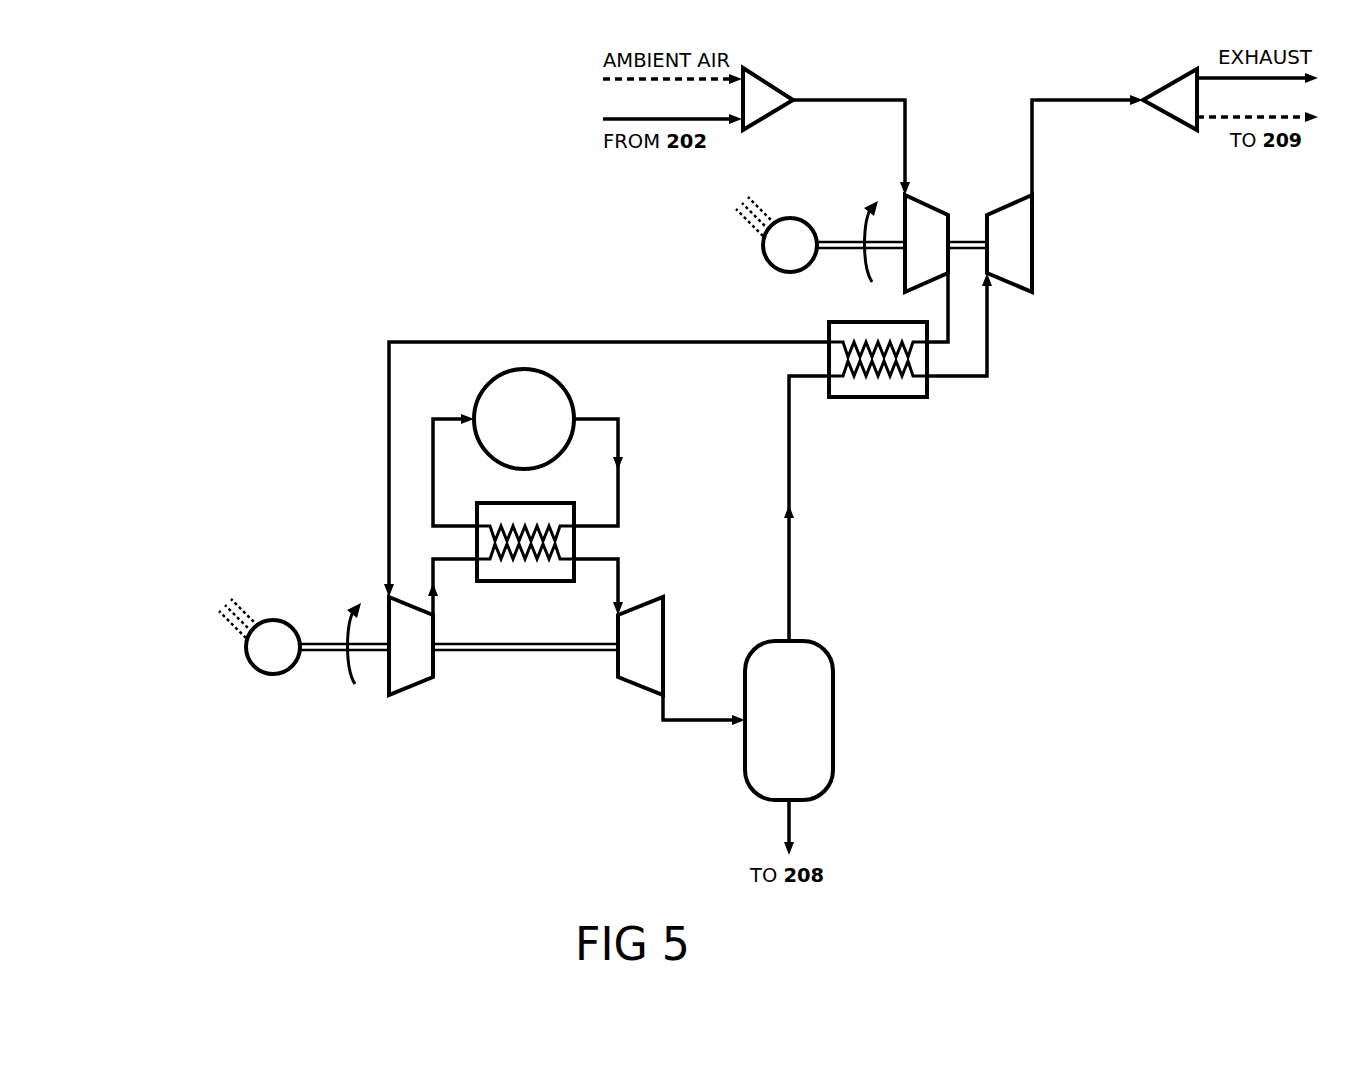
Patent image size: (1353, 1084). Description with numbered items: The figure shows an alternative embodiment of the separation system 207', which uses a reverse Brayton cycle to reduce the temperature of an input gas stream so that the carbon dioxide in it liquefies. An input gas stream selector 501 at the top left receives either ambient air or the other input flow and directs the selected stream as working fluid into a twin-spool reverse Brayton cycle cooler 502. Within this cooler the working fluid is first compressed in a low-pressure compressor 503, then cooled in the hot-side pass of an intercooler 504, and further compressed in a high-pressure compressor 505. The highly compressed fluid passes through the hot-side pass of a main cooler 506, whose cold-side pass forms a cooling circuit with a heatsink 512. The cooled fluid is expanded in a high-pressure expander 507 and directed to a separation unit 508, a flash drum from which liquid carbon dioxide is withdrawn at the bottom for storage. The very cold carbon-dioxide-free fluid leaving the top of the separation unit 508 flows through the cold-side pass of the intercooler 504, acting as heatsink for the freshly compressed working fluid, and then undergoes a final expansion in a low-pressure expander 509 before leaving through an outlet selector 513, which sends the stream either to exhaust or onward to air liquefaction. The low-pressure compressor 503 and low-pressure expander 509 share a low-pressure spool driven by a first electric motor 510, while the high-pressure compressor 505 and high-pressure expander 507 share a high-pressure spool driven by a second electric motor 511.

The separation system 207' is at (137, 135).
The input gas stream selector 501 is at (772, 85).
The twin-spool reverse Brayton cycle cooler 502 is at (960, 542).
The low-pressure compressor 503 is at (928, 205).
The intercooler 504 is at (927, 392).
The high-pressure compressor 505 is at (437, 666).
The main cooler 506 is at (545, 503).
The high-pressure expander 507 is at (615, 666).
The separation unit 508 is at (808, 642).
The low-pressure expander 509 is at (1035, 268).
The first electric motor 510 is at (806, 225).
The second electric motor 511 is at (290, 627).
The heatsink 512 is at (562, 382).
The outlet selector 513 is at (1166, 115).